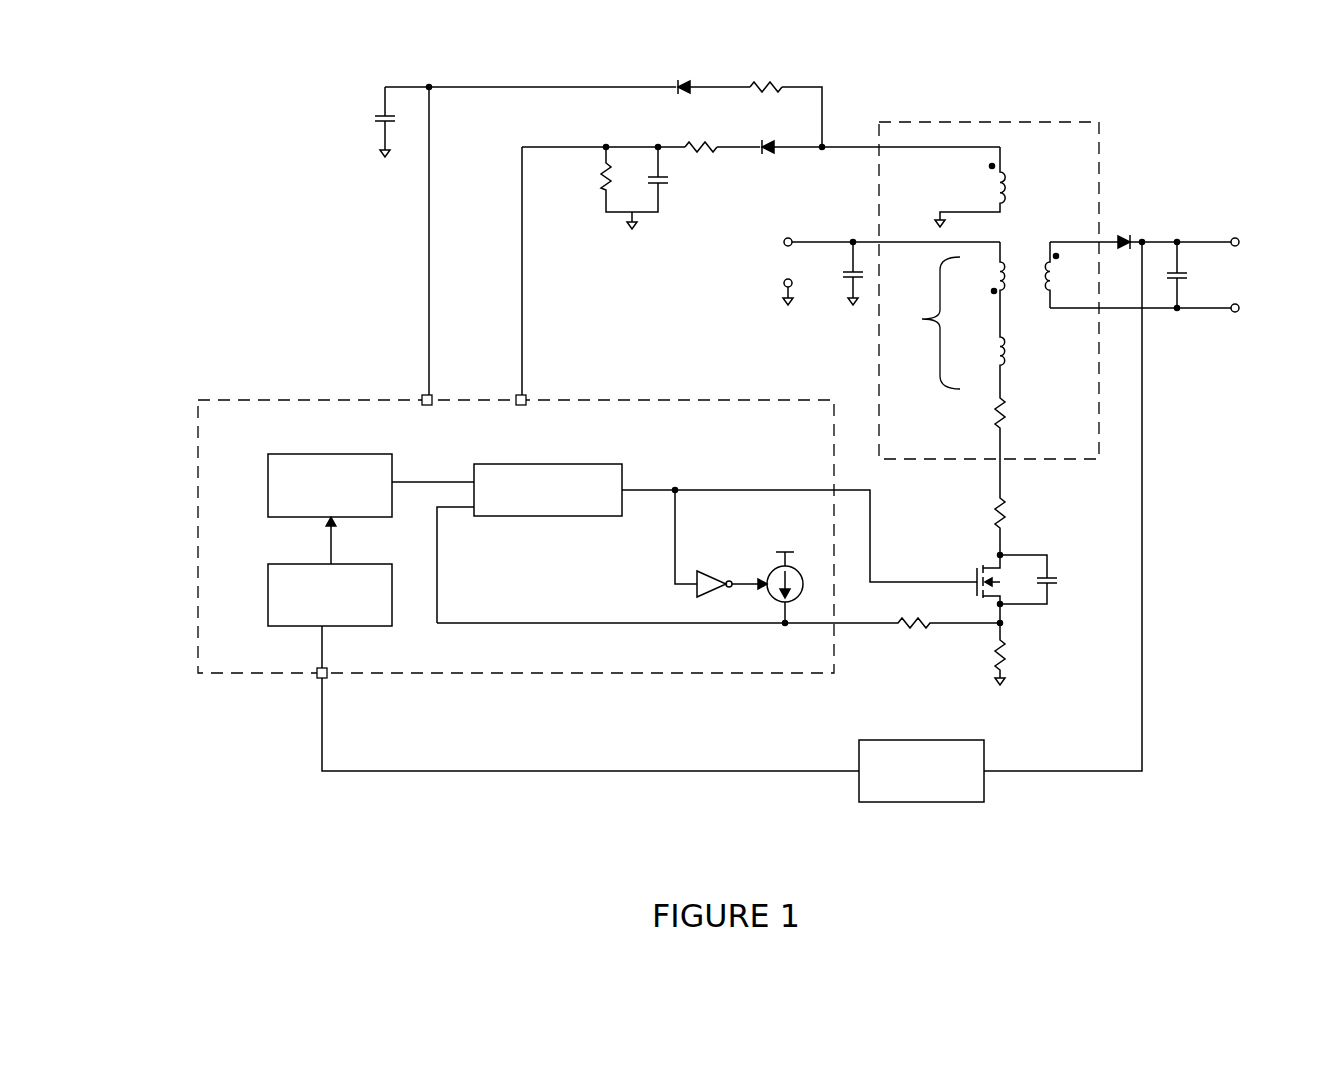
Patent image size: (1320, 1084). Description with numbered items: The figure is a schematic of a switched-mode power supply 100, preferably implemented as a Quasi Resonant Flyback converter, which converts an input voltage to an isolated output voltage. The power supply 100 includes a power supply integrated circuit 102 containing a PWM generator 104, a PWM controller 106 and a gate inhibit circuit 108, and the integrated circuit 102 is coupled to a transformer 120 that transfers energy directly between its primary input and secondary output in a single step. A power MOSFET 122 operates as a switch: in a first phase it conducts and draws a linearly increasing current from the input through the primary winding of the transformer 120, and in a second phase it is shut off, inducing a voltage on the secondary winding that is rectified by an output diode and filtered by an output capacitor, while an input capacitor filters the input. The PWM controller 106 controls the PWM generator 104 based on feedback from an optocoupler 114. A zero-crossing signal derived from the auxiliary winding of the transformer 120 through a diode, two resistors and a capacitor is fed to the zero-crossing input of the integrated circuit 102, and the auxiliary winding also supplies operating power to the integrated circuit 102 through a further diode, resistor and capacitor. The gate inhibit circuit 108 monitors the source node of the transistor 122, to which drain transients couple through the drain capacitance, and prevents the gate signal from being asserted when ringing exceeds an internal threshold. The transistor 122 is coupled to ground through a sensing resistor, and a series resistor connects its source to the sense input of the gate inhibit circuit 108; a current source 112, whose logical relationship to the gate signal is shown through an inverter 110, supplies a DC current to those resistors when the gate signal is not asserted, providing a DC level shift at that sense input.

The switched-mode power supply 100 is at (181, 104).
The power supply integrated circuit 102 is at (228, 400).
The PWM generator 104 is at (360, 454).
The PWM controller 106 is at (300, 564).
The gate inhibit circuit 108 is at (583, 464).
The inverter 110 is at (727, 541).
The current source 112 is at (802, 569).
The optocoupler 114 is at (925, 740).
The transformer 120 is at (990, 122).
The power MOSFET 122 is at (977, 567).